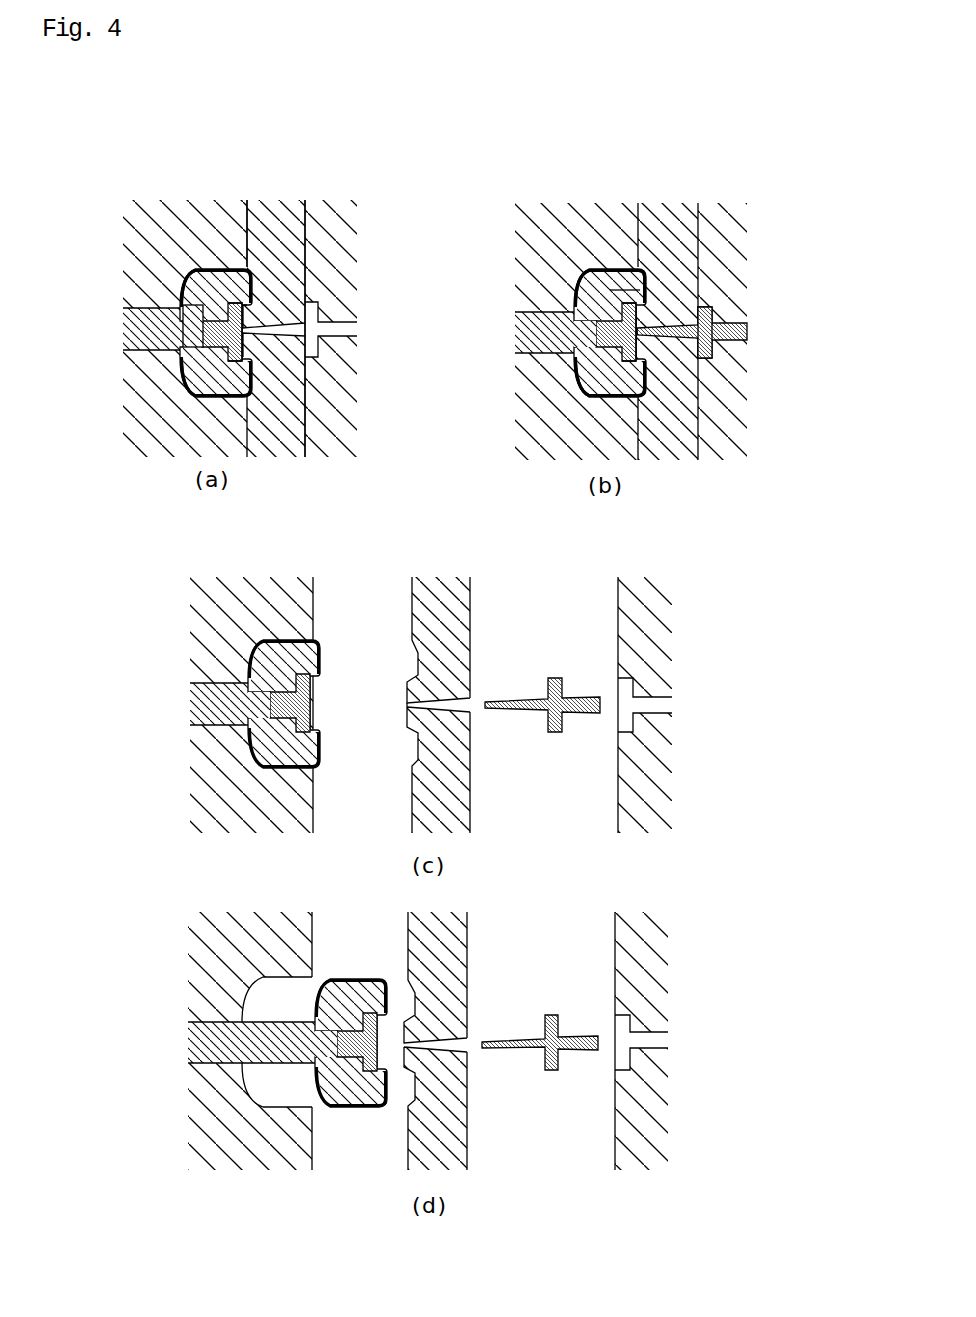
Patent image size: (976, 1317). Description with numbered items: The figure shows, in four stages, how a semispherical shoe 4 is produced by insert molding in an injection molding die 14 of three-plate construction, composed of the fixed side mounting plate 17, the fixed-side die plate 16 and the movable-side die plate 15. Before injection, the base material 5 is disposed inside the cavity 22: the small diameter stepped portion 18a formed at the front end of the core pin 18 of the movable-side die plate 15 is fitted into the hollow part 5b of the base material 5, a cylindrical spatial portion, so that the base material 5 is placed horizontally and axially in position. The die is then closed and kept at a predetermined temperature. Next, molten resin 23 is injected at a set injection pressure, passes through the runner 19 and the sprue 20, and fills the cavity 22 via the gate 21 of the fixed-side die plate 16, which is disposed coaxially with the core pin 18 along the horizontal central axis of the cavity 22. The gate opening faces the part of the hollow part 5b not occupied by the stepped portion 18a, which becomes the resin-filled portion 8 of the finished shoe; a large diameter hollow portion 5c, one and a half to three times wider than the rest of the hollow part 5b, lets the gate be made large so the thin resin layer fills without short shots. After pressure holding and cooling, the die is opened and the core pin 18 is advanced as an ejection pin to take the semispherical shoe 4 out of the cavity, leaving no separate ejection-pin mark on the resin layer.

The semispherical shoe 4 is at (359, 959).
The base material 5 is at (250, 393).
The hollow part 5b is at (216, 333).
The large diameter hollow portion 5c is at (227, 352).
The resin-filled portion 8 is at (252, 308).
The injection molding die 14 is at (152, 182).
The movable-side die plate 15 is at (132, 277).
The fixed-side die plate 16 is at (270, 220).
The fixed side mounting plate 17 is at (333, 227).
The core pin 18 is at (143, 333).
The small diameter stepped portion 18a is at (200, 333).
The runner 19 is at (712, 347).
The sprue 20 is at (675, 323).
The gate 21 is at (657, 353).
The cavity 22 is at (242, 270).
The molten resin 23 is at (647, 285).